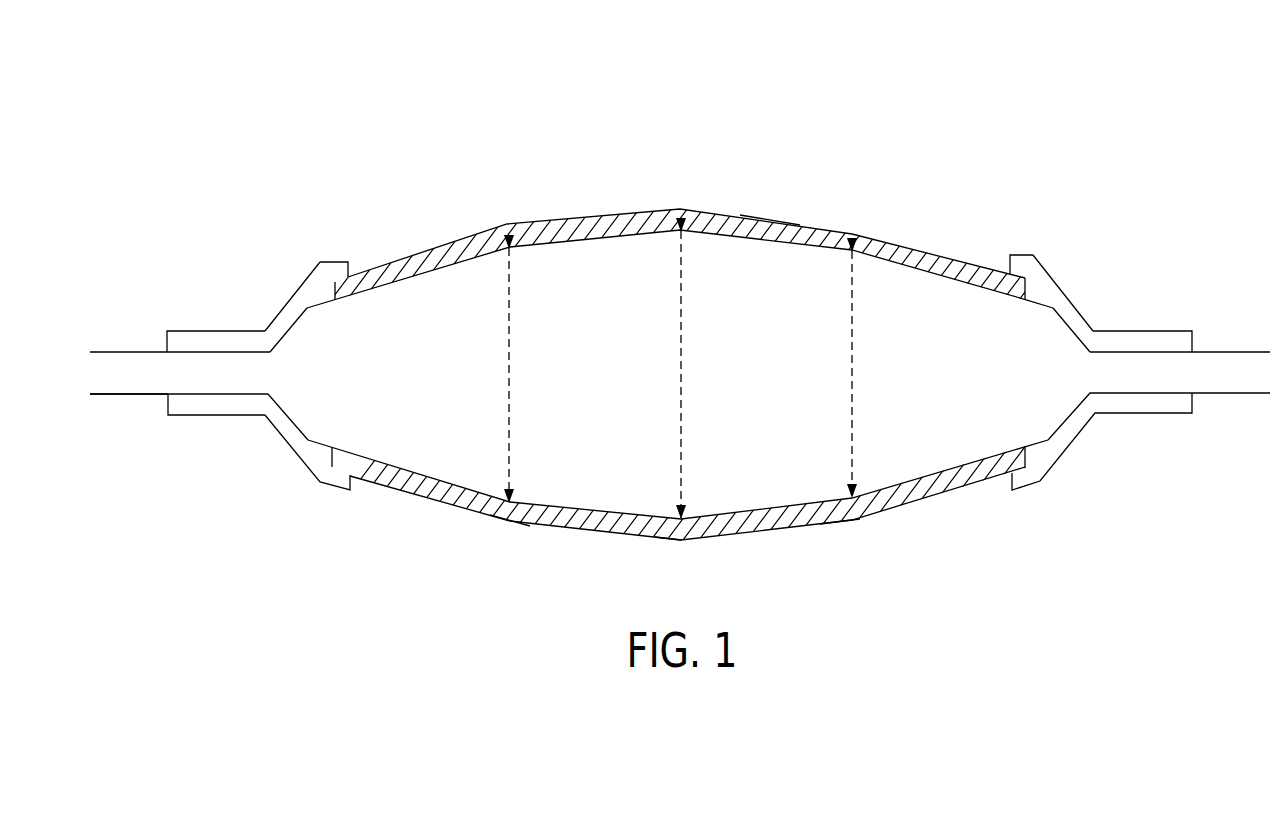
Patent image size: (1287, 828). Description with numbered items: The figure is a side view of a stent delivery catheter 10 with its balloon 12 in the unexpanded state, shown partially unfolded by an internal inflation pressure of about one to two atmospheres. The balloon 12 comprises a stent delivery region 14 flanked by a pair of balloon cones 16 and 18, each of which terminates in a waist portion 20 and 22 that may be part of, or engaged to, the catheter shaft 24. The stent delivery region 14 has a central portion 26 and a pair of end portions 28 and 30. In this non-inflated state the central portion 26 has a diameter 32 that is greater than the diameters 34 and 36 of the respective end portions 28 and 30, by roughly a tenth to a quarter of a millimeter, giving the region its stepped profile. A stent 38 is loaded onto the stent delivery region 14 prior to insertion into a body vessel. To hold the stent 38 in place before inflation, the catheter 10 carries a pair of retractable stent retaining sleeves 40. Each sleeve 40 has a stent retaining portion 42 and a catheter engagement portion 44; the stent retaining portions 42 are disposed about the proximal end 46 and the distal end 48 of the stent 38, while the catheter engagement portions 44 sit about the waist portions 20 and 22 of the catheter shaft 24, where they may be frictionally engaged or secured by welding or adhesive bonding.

The stent delivery catheter 10 is at (722, 163).
The balloon 12 is at (930, 457).
The stent delivery region 14 is at (598, 255).
The balloon cone 16 is at (293, 335).
The balloon cone 18 is at (1062, 332).
The waist portion 20 is at (208, 362).
The waist portion 22 is at (1160, 360).
The catheter shaft 24 is at (125, 348).
The central portion 26 is at (668, 541).
The end portion 28 is at (498, 520).
The end portion 30 is at (840, 519).
The diameter 32 is at (681, 373).
The diameter 34 is at (509, 373).
The diameter 36 is at (852, 373).
The stent 38 is at (770, 217).
The retractable stent retaining sleeve 40 is at (1132, 421).
The stent retaining portion 42 is at (335, 478).
The catheter engagement portion 44 is at (200, 410).
The proximal end 46 is at (338, 278).
The distal end 48 is at (1020, 272).